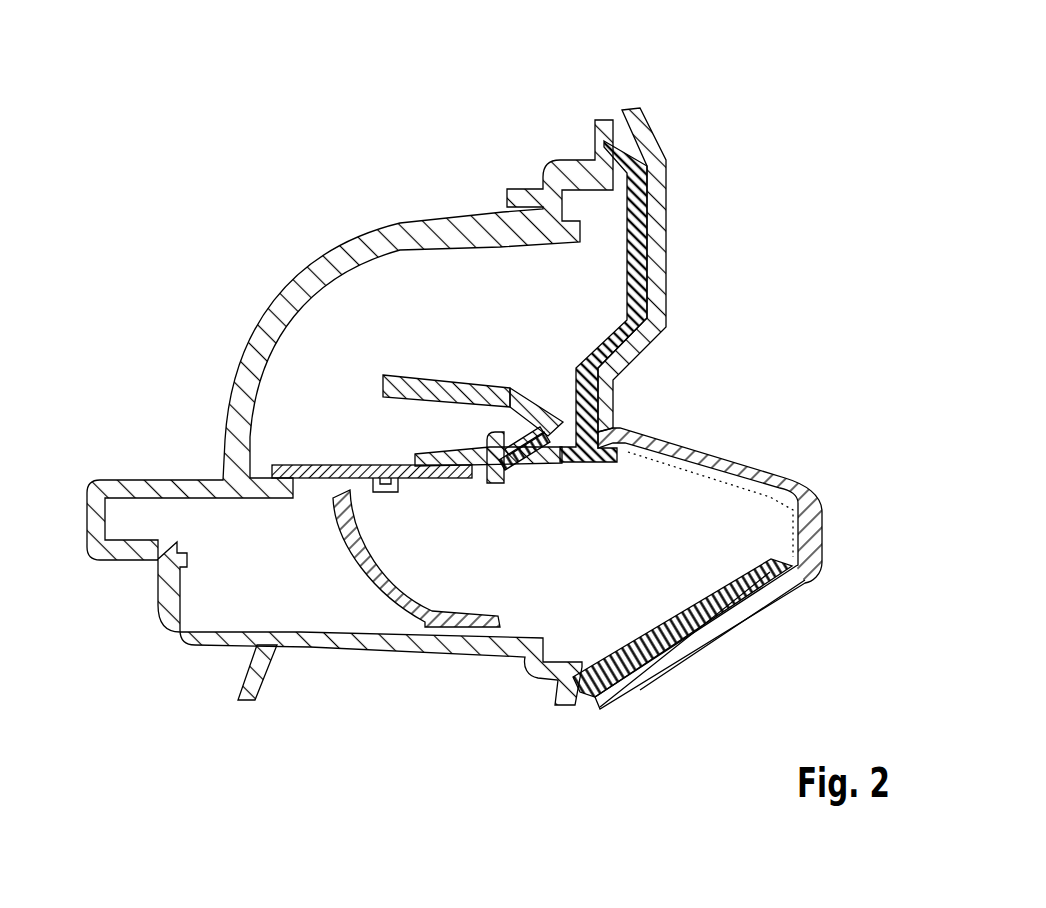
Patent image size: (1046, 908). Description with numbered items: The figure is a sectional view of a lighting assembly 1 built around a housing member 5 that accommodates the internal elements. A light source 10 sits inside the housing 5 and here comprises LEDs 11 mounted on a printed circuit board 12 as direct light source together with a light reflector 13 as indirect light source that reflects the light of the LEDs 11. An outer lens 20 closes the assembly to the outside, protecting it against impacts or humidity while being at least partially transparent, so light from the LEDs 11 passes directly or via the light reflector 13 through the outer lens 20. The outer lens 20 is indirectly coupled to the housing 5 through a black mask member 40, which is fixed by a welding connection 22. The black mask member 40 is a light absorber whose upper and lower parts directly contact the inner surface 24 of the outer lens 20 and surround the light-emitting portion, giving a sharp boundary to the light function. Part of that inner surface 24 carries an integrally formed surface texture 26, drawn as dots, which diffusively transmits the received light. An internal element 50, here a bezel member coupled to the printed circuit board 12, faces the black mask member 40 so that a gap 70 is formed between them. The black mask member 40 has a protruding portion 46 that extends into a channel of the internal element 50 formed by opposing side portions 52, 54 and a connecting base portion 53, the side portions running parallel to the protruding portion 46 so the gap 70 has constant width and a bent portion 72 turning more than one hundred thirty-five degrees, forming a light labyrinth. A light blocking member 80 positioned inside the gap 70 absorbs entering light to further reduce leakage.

The lighting assembly 1 is at (270, 158).
The housing member 5 is at (384, 222).
The light source 10 is at (310, 541).
The LEDs 11 is at (388, 491).
The printed circuit board 12 is at (334, 465).
The light reflector 13 is at (372, 578).
The outer lens 20 is at (824, 522).
The welding connection 22 is at (610, 106).
The inner surface 24 is at (762, 482).
The surface texture 26 is at (680, 470).
The black mask member 40 is at (637, 232).
The protruding portion 46 is at (562, 464).
The internal element 50 is at (435, 432).
The side portion 52 is at (420, 372).
The base portion 53 is at (447, 452).
The side portion 54 is at (512, 486).
The gap 70 is at (523, 470).
The bent portion 72 is at (507, 436).
The light blocking member 80 is at (546, 430).